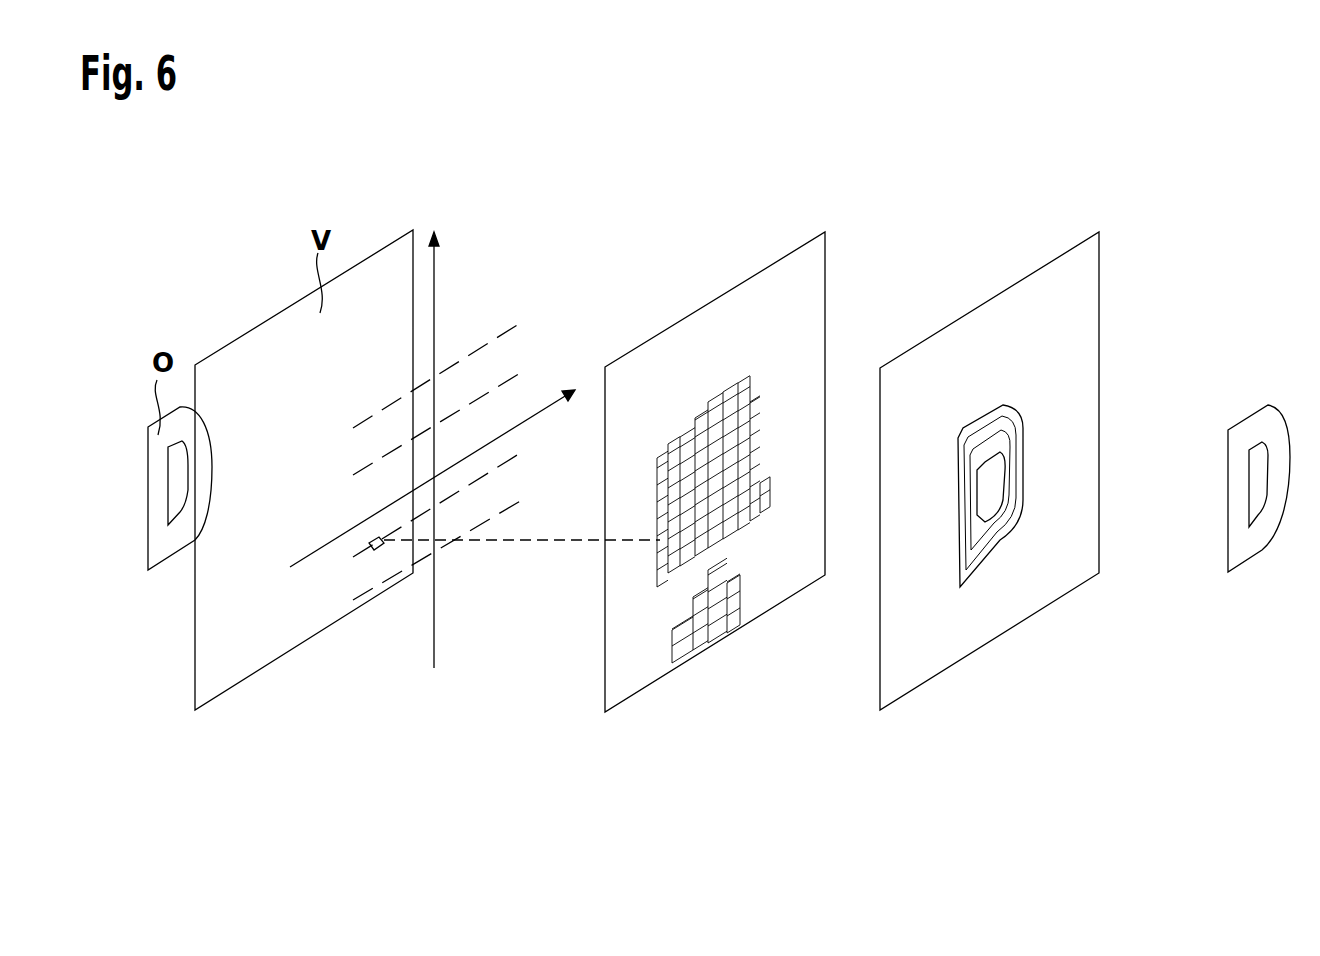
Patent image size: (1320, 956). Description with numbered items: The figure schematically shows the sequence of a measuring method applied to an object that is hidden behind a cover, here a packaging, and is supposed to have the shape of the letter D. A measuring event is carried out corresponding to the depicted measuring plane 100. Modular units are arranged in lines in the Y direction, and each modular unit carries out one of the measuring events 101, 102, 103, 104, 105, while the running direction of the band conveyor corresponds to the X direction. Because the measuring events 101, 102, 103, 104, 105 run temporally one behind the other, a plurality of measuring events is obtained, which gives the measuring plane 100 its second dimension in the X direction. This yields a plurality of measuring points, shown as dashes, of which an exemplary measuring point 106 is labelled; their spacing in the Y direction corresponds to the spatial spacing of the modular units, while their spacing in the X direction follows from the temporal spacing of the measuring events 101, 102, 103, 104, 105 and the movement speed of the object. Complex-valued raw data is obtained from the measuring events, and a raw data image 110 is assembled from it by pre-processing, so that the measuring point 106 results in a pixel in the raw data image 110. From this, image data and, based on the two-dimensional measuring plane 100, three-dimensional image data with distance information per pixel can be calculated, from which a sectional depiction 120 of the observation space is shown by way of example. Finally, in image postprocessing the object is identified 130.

The measuring plane 100 is at (435, 620).
The measuring event 101 is at (503, 330).
The measuring event 102 is at (503, 382).
The measuring event 103 is at (547, 400).
The measuring event 104 is at (500, 462).
The measuring event 105 is at (483, 527).
The measuring point 106 is at (375, 550).
The raw data image 110 is at (697, 655).
The sectional depiction 120 is at (970, 655).
The identification of the object 130 is at (1243, 575).